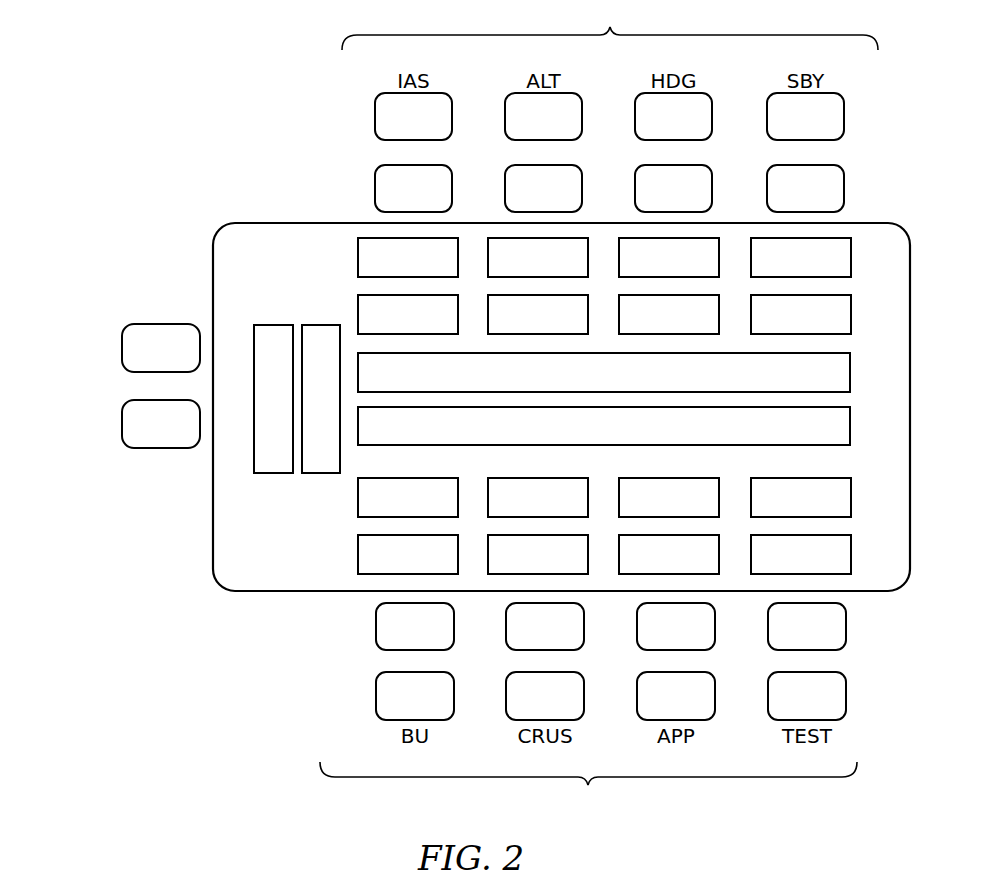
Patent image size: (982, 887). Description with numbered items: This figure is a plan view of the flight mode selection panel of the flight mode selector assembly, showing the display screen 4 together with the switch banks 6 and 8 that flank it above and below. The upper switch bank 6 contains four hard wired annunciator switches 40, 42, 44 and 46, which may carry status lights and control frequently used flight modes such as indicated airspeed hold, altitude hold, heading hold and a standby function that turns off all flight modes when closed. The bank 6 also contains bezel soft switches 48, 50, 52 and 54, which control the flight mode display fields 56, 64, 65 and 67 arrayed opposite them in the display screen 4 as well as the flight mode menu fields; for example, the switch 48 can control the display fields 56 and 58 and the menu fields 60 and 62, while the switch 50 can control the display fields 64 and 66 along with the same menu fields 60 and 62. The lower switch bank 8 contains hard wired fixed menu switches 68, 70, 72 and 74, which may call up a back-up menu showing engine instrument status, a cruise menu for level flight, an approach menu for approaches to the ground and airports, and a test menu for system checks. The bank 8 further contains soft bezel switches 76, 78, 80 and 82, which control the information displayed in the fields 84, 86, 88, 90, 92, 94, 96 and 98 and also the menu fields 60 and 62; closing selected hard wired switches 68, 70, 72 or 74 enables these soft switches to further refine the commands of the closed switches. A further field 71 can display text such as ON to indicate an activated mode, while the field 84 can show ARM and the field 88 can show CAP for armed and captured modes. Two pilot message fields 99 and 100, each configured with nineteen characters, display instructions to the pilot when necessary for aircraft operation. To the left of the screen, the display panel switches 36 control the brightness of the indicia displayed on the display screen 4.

The display screen 4 is at (292, 223).
The switch bank 6 is at (610, 26).
The switch bank 8 is at (588, 786).
The display panel switches 36 is at (122, 418).
The annunciator switch 40 is at (375, 113).
The annunciator switch 42 is at (505, 108).
The annunciator switch 44 is at (713, 108).
The annunciator switch 46 is at (845, 108).
The bezel soft switch 48 is at (375, 182).
The bezel soft switch 50 is at (505, 182).
The bezel soft switch 52 is at (713, 178).
The bezel soft switch 54 is at (845, 186).
The flight mode display field 56 is at (358, 268).
The display field 58 is at (358, 308).
The menu field 60 is at (272, 473).
The menu field 62 is at (320, 473).
The flight mode display field 64 is at (578, 239).
The flight mode display field 65 is at (710, 239).
The display field 66 is at (588, 313).
The flight mode display field 67 is at (842, 239).
The hard wired fixed menu switch 68 is at (719, 313).
The hard wired fixed menu switch 70 is at (506, 690).
The field 71 is at (850, 308).
The hard wired fixed menu switch 72 is at (637, 690).
The hard wired fixed menu switch 74 is at (768, 690).
The soft bezel switch 76 is at (376, 622).
The soft bezel switch 78 is at (506, 622).
The soft bezel switch 80 is at (637, 622).
The soft bezel switch 82 is at (768, 622).
The field 84 is at (438, 478).
The field 86 is at (458, 553).
The field 88 is at (568, 478).
The field 90 is at (589, 553).
The field 92 is at (698, 478).
The field 94 is at (720, 553).
The field 96 is at (828, 478).
The field 98 is at (850, 553).
The pilot message field 99 is at (850, 372).
The pilot message field 100 is at (850, 430).